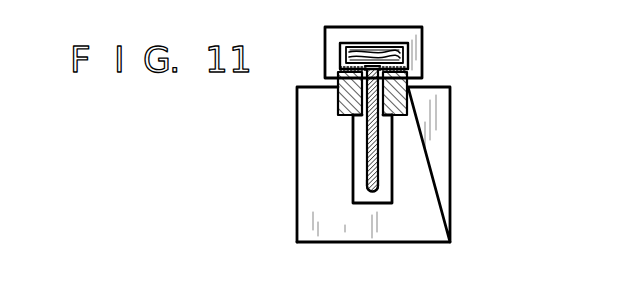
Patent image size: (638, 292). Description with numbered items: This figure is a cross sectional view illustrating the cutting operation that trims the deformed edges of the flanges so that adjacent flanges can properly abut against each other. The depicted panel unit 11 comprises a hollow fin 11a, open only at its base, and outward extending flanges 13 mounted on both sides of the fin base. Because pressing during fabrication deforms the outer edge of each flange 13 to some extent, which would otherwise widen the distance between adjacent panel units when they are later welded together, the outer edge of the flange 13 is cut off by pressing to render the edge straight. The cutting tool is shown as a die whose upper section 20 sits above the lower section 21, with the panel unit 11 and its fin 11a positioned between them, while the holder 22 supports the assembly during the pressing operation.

The panel unit 11 is at (350, 155).
The hollow fin 11a is at (370, 181).
The flange 13 is at (340, 57).
The upper section of a die 20 is at (422, 54).
The lower section of a die 21 is at (407, 95).
The holder 22 is at (450, 210).